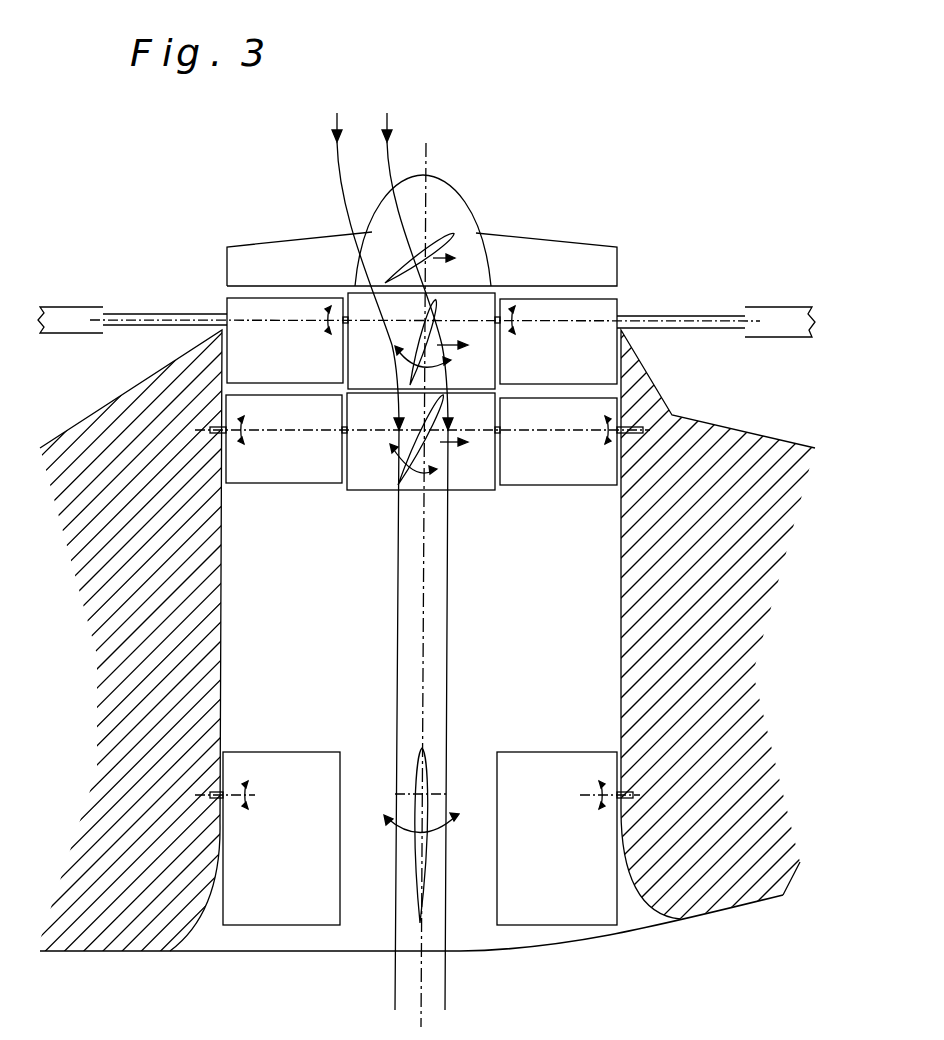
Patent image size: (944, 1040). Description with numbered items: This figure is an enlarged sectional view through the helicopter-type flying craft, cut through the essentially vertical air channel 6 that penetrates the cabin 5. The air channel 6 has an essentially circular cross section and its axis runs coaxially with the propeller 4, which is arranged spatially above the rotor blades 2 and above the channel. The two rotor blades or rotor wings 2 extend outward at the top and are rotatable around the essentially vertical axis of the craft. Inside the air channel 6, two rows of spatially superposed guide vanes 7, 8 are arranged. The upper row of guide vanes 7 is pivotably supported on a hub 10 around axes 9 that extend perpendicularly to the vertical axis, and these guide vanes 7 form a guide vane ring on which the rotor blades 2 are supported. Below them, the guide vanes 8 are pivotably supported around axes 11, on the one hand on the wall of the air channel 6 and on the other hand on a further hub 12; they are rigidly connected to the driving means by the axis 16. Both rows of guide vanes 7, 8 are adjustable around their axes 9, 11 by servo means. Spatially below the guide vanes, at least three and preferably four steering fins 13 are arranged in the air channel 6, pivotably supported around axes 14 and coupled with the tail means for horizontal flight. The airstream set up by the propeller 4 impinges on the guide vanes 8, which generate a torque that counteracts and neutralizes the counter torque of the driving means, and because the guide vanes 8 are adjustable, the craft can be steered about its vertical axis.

The rotor blades 2 is at (68, 313).
The propeller 4 is at (600, 242).
The cabin 5 is at (733, 877).
The air channel 6 is at (310, 652).
The guide vanes 7 is at (593, 323).
The guide vanes 8 is at (625, 400).
The axes 9 is at (347, 292).
The hub 10 is at (378, 381).
The axes 11 is at (212, 427).
The further hub 12 is at (367, 482).
The steering fins 13 is at (280, 908).
The axes 14 is at (223, 793).
The axis 16 is at (433, 292).